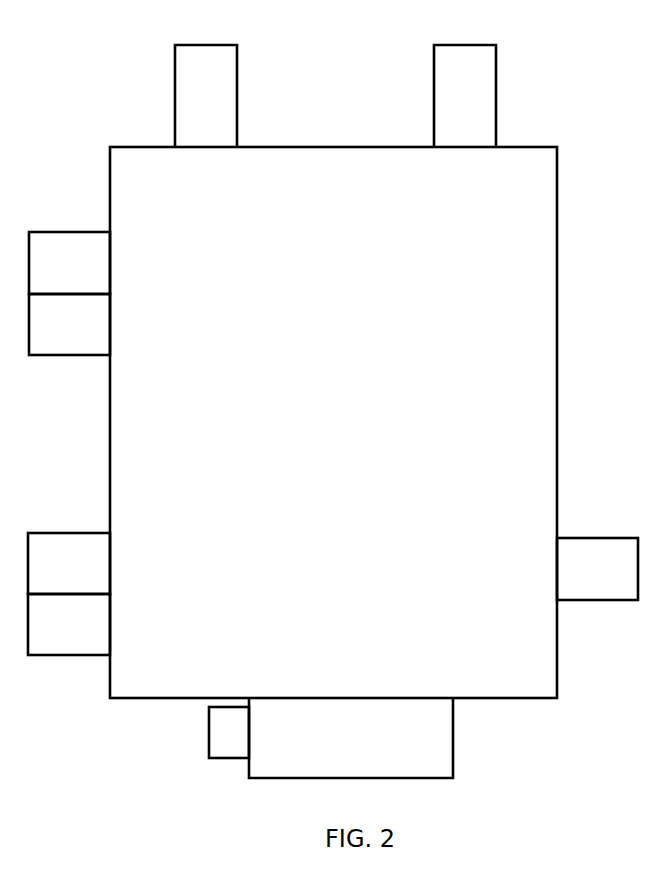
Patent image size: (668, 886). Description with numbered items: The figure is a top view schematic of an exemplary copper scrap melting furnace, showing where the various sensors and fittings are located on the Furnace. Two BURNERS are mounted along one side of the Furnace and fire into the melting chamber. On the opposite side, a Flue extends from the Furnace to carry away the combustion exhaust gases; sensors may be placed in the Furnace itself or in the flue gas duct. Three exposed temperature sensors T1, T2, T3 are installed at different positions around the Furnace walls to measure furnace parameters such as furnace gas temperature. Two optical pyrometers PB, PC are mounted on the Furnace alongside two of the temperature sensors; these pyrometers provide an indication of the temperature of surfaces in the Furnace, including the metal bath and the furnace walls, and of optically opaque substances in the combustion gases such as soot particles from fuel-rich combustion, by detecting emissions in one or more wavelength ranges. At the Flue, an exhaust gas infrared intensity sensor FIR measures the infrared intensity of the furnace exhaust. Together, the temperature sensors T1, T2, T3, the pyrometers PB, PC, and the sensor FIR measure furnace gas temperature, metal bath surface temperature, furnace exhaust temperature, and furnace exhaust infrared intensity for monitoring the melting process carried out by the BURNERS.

The copper scrap melting furnace Furnace is at (333, 422).
The burners BURNERS is at (465, 113).
The exposed temperature sensor T3 is at (69, 263).
The optical pyrometer PC is at (69, 324).
The exposed temperature sensor T2 is at (69, 563).
The optical pyrometer PB is at (69, 624).
The exposed temperature sensor T1 is at (597, 569).
The flue Flue is at (351, 738).
The exhaust gas infrared intensity sensor FIR is at (210, 732).